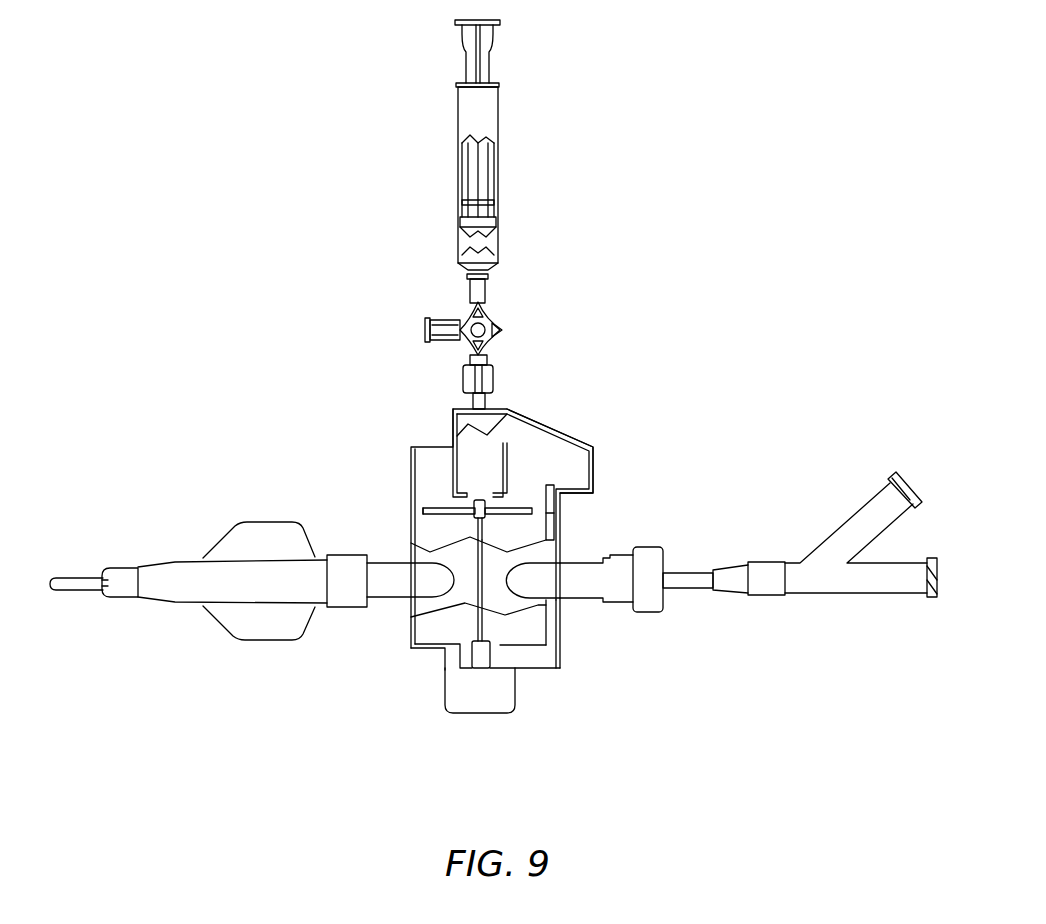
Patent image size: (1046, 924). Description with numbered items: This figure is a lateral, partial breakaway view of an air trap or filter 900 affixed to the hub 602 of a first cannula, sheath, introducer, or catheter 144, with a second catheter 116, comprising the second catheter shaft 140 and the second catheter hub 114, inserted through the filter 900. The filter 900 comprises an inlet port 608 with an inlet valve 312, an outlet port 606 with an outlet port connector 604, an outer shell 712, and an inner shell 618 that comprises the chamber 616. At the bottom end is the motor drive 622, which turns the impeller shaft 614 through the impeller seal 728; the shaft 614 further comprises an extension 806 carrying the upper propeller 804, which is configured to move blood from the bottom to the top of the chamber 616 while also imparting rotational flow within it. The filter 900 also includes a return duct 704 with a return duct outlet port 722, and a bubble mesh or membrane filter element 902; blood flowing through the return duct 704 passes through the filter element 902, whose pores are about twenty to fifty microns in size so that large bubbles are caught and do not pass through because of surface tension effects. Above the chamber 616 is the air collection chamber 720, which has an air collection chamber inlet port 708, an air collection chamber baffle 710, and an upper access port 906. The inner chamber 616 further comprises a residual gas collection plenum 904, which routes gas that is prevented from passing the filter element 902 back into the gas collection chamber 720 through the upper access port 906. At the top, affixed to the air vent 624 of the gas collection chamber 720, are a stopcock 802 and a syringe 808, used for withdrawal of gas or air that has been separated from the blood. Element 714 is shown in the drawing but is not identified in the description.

The air trap or filter 900 is at (296, 420).
The syringe 808 is at (487, 127).
The stopcock 802 is at (478, 303).
The air vent 624 is at (482, 402).
The bubble mesh or membrane filter element 902 is at (593, 447).
The residual gas collection plenum 904 is at (547, 465).
The air collection chamber inlet port 708 is at (457, 490).
The air collection chamber 720 is at (478, 440).
The upper access port 906 is at (504, 437).
The extension 806 is at (430, 527).
The propeller 804 is at (515, 503).
The air collection chamber baffle 710 is at (478, 497).
The chamber 616 is at (425, 520).
The return duct 704 is at (553, 520).
The outer shell 712 is at (552, 553).
The outlet port 606 is at (408, 587).
The inner shell 618 is at (552, 630).
The return duct outlet port 722 is at (500, 645).
The housing bottom 714 is at (507, 658).
The impeller shaft 614 is at (470, 627).
The impeller seal 728 is at (478, 668).
The motor drive 622 is at (490, 697).
The hub 602 is at (263, 570).
The outlet port connector 604 is at (355, 578).
The first cannula, sheath, introducer, or catheter 144 is at (123, 585).
The second catheter shaft 140 is at (77, 585).
The inlet port 608 is at (575, 580).
The inlet valve 312 is at (653, 568).
The second catheter 116 is at (683, 578).
The second catheter hub 114 is at (865, 525).